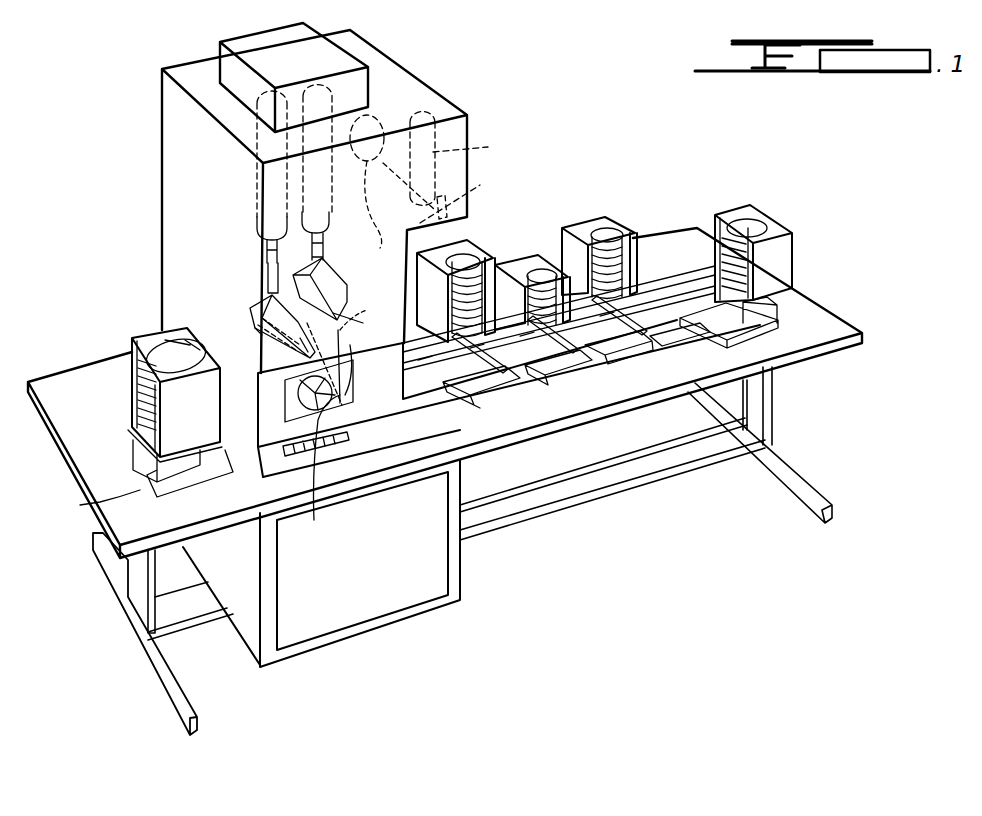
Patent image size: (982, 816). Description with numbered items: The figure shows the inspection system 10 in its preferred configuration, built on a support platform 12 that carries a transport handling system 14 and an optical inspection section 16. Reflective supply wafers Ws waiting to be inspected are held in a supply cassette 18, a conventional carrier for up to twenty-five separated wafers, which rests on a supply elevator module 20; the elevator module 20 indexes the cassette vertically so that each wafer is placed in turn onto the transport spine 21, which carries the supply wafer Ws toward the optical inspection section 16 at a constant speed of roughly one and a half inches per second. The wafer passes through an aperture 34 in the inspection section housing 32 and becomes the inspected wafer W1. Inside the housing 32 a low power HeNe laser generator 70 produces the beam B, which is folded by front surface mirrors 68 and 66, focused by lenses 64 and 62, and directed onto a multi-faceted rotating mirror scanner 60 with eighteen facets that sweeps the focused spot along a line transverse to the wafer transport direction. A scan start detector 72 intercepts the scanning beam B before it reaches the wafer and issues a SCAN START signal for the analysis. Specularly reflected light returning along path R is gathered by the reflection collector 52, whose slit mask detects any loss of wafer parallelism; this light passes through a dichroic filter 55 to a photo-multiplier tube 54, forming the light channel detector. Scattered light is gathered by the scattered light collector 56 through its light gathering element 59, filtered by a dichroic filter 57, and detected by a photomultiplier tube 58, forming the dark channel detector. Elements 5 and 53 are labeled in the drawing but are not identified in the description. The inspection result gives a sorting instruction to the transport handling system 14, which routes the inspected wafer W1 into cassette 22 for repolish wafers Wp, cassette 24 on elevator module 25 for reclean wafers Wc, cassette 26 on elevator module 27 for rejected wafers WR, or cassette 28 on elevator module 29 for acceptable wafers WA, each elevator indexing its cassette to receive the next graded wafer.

The inspection system 10 is at (517, 112).
The support platform 12 is at (862, 333).
The transport handling system 14 is at (515, 378).
The optical inspection section 16 is at (382, 57).
The supply cassette 18 is at (168, 418).
The supply elevator module 20 is at (92, 506).
The transport spine 21 is at (256, 375).
The cassette 22 is at (468, 245).
The cassette 24 is at (540, 250).
The elevator module 25 is at (603, 370).
The cassette 26 is at (596, 212).
The elevator module 27 is at (548, 380).
The cassette 28 is at (790, 233).
The elevator module 29 is at (777, 307).
The inspection section housing 32 is at (257, 482).
The aperture 34 is at (248, 481).
The turntable 5 is at (366, 405).
The reflection collector 52 is at (250, 308).
The vacuum chuck 53 is at (277, 347).
The photo-multiplier tube 54 is at (266, 243).
The dichroic filter 55 is at (266, 265).
The scattered light collector 56 is at (347, 292).
The dichroic filter 57 is at (345, 275).
The photomultiplier tube 58 is at (257, 220).
The light gathering element 59 is at (373, 327).
The rotating mirror scanner 60 is at (372, 118).
The lens 62 is at (380, 162).
The lens 64 is at (432, 212).
The front surface mirror 66 is at (365, 200).
The front surface mirror 68 is at (438, 200).
The HeNe laser generator 70 is at (469, 181).
The scan start detector 72 is at (355, 350).
The beam B is at (367, 313).
The specular reflection path R is at (320, 468).
The inspected wafer W1 is at (362, 422).
The supply wafer Ws is at (163, 347).
The repolish wafer Wp is at (477, 257).
The reclean wafer Wc is at (548, 237).
The rejected wafer WR is at (613, 223).
The acceptable wafer WA is at (753, 217).